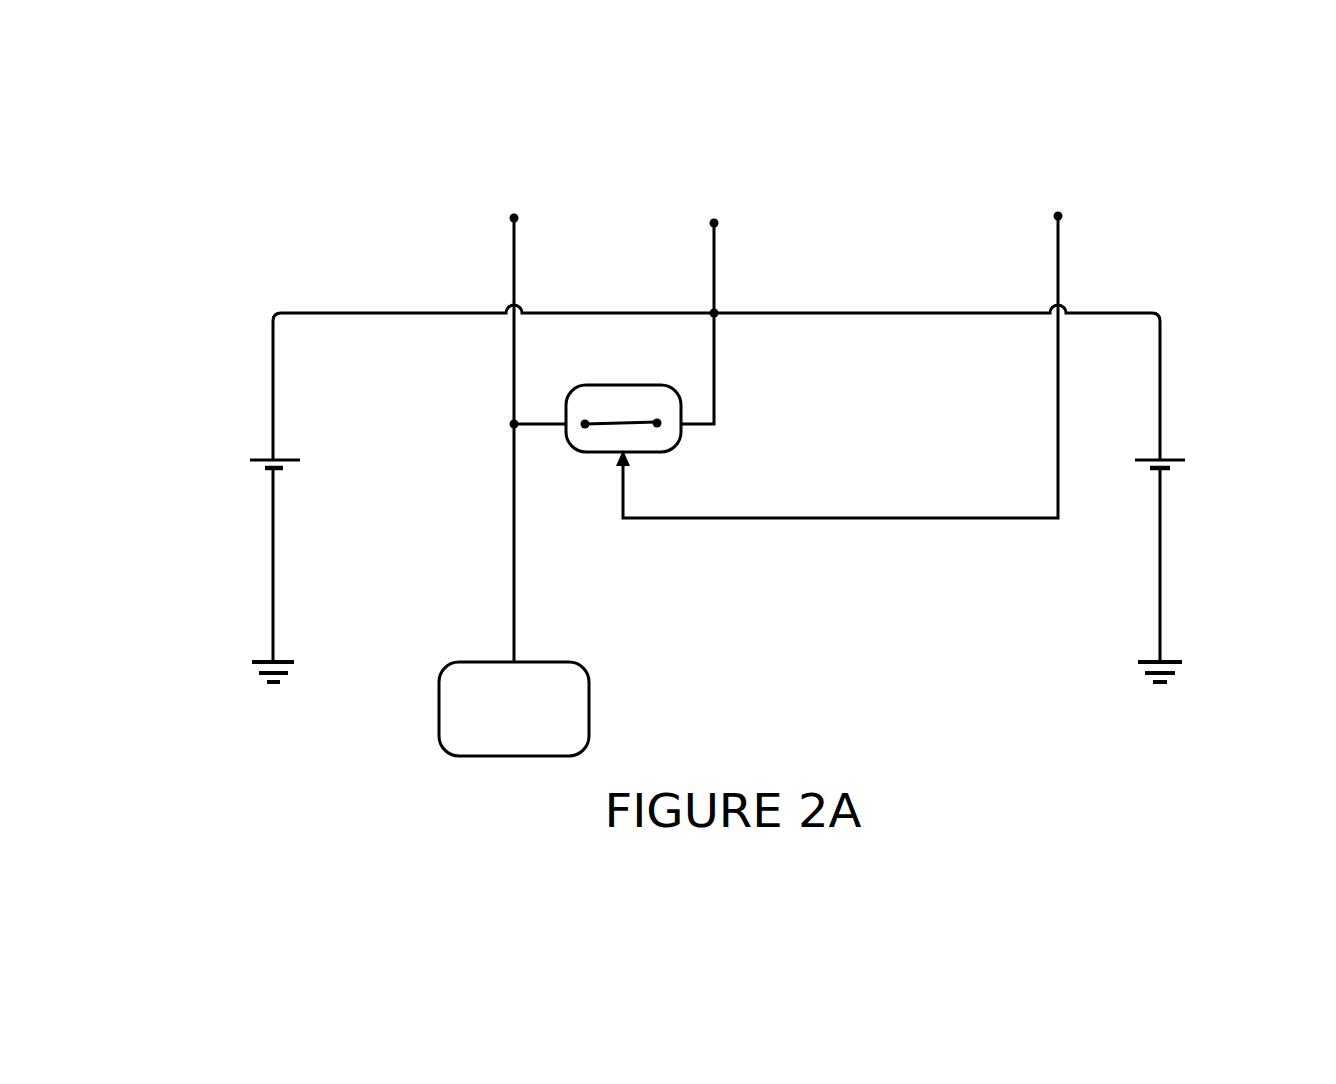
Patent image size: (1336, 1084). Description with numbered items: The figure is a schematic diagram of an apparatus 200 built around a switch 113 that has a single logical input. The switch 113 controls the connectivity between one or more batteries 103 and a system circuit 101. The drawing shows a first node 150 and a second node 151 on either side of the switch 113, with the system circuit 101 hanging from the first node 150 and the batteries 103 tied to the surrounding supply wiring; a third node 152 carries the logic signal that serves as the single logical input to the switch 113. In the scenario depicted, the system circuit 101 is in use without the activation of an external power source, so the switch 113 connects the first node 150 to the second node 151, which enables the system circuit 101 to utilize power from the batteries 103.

The apparatus 200 is at (252, 84).
The first node 150 is at (514, 218).
The second node 151 is at (714, 223).
The node N3 (Logic) 152 is at (1058, 216).
The switch 113 is at (652, 385).
The system circuit 101 is at (468, 662).
The batteries 103 is at (715, 501).